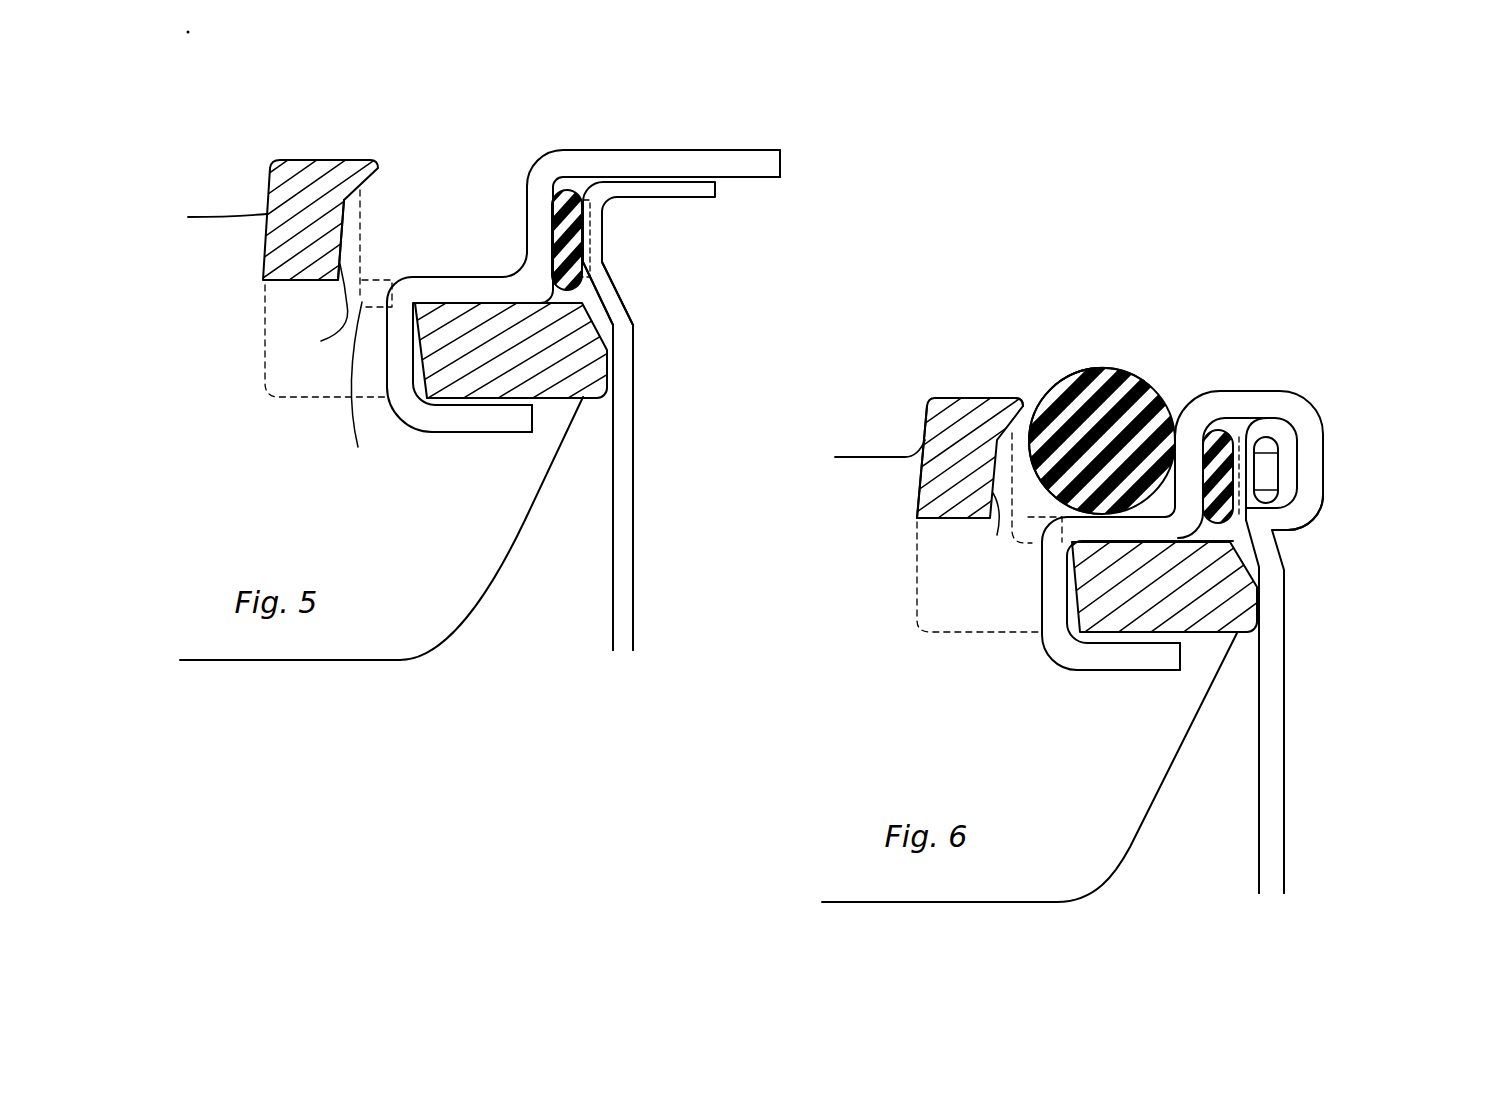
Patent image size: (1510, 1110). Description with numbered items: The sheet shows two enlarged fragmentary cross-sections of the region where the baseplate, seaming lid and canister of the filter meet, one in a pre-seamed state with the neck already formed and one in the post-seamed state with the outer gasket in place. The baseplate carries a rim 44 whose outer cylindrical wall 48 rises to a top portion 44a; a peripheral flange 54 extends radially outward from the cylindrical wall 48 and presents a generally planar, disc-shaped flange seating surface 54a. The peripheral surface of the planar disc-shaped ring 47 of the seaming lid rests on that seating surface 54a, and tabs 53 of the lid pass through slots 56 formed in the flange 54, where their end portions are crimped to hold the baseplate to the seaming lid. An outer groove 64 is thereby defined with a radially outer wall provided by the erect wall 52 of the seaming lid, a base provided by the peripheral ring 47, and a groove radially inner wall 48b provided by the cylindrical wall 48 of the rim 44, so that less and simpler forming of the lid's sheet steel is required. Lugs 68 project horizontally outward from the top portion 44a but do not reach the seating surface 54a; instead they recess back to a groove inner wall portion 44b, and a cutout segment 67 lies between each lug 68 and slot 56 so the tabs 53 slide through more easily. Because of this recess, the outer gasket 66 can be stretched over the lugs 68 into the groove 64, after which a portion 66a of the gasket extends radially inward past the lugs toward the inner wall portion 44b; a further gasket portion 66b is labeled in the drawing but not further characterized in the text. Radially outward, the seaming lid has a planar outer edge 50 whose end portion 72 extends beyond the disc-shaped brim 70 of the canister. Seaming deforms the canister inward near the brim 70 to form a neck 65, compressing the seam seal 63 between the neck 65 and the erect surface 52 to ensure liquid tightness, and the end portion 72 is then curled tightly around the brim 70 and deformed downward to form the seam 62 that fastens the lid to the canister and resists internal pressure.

In FIG. 5, the rim 44 is at (270, 256).
In FIG. 6, the rim 44 is at (918, 481).
In FIG. 5, the top portion 44a is at (313, 158).
In FIG. 5, the groove inner wall portion 44b is at (345, 230).
In FIG. 5, the planar disc-shaped ring 47 is at (442, 291).
In FIG. 6, the planar disc-shaped ring 47 is at (1123, 532).
In FIG. 6, the cylindrical wall 48 is at (917, 490).
In FIG. 5, the groove radially inner wall 48b is at (362, 201).
In FIG. 5, the outer edge 50 is at (617, 160).
In FIG. 6, the outer edge 50 is at (1315, 517).
In FIG. 5, the erect wall 52 is at (537, 248).
In FIG. 6, the erect wall 52 is at (1195, 420).
In FIG. 5, the tabs 53 is at (498, 417).
In FIG. 6, the tabs 53 is at (1053, 577).
In FIG. 5, the peripheral flange 54 is at (604, 349).
In FIG. 6, the peripheral flange 54 is at (1187, 590).
In FIG. 5, the flange seating surface 54a is at (657, 490).
In FIG. 6, the flange seating surface 54a is at (1271, 736).
In FIG. 5, the slots 56 is at (365, 391).
In FIG. 6, the seam 62 is at (1338, 432).
In FIG. 5, the seam seal 63 is at (567, 243).
In FIG. 6, the seam seal 63 is at (1212, 433).
In FIG. 5, the groove 64 is at (477, 181).
In FIG. 6, the groove 64 is at (1163, 500).
In FIG. 5, the neck 65 is at (623, 299).
In FIG. 6, the outer gasket 66 is at (1073, 398).
In FIG. 6, the portion of outer gasket 66a is at (996, 427).
In FIG. 6, the top of bulb seal 66b is at (1112, 368).
In FIG. 5, the cutout segment 67 is at (320, 315).
In FIG. 6, the cutout segment 67 is at (992, 545).
In FIG. 5, the lugs 68 is at (425, 100).
In FIG. 6, the lugs 68 is at (1024, 396).
In FIG. 5, the brim 70 is at (715, 184).
In FIG. 5, the end portion 72 is at (747, 157).
In FIG. 6, the end portion 72 is at (1267, 465).